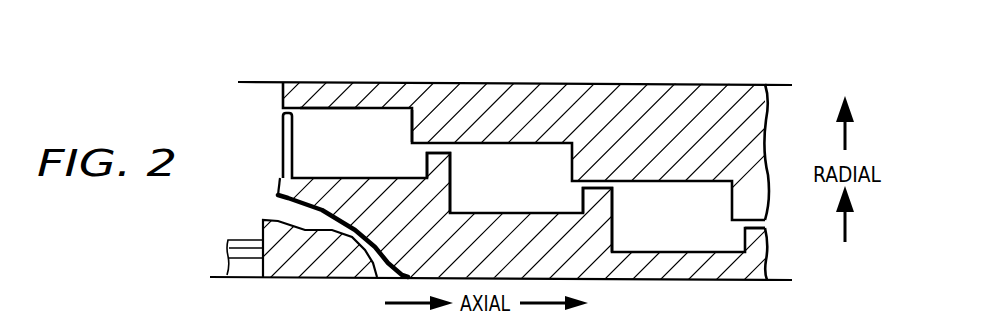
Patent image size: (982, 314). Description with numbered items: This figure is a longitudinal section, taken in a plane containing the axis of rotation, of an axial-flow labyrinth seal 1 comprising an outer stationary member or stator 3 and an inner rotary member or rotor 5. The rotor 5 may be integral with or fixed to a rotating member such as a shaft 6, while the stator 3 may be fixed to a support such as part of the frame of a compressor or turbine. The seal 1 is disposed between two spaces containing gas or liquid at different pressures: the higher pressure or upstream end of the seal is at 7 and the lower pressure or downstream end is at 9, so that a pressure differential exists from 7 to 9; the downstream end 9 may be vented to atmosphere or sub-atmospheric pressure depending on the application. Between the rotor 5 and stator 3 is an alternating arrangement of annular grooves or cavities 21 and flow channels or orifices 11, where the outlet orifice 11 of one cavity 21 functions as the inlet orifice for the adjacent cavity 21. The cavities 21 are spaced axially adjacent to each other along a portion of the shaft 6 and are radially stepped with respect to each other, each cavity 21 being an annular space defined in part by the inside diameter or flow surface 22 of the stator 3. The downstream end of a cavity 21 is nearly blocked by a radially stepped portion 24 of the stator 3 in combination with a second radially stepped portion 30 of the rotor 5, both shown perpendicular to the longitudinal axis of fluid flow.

The axial-flow labyrinth seal 1 is at (241, 129).
The stator 3 is at (289, 91).
The rotor 5 is at (281, 178).
The shaft 6 is at (230, 240).
The upstream end 7 is at (283, 108).
The downstream end 9 is at (767, 223).
The flow channels or orifices 11 is at (448, 152).
The annular grooves or cavities 21 is at (336, 161).
The flow surface of stator 22 is at (330, 112).
The radially stepped portion of stator 24 is at (412, 130).
The radially stepped portion of rotor 30 is at (427, 158).